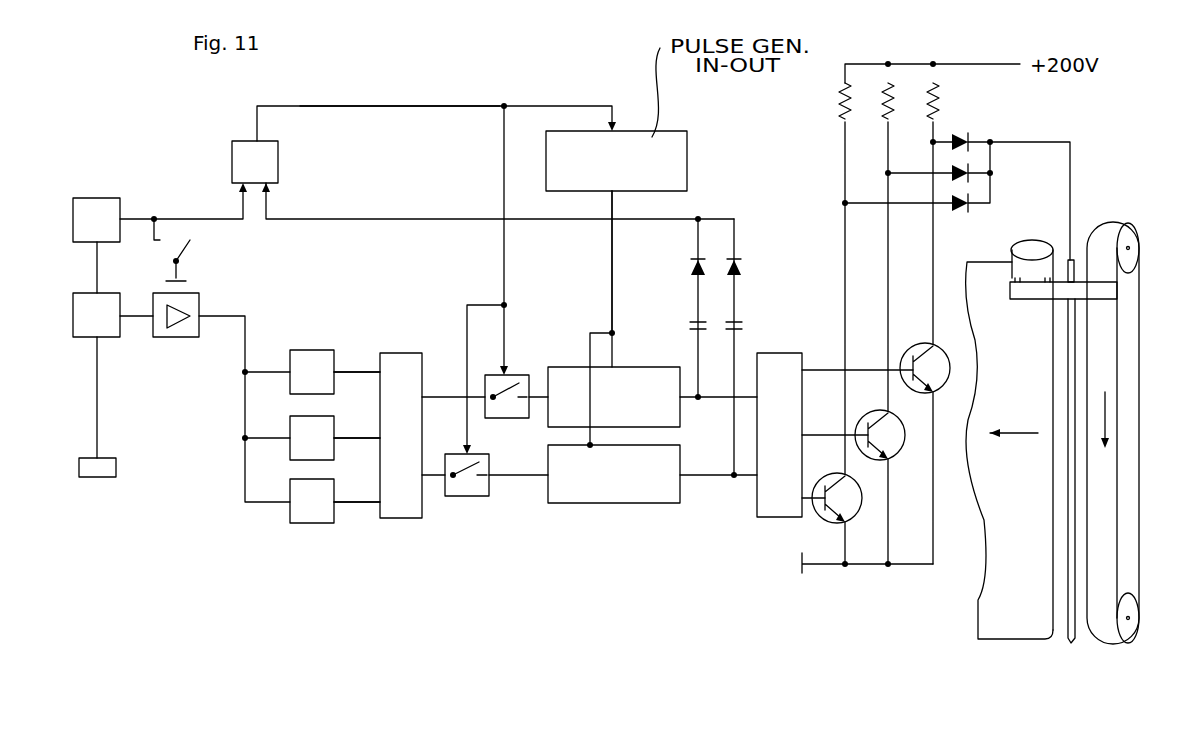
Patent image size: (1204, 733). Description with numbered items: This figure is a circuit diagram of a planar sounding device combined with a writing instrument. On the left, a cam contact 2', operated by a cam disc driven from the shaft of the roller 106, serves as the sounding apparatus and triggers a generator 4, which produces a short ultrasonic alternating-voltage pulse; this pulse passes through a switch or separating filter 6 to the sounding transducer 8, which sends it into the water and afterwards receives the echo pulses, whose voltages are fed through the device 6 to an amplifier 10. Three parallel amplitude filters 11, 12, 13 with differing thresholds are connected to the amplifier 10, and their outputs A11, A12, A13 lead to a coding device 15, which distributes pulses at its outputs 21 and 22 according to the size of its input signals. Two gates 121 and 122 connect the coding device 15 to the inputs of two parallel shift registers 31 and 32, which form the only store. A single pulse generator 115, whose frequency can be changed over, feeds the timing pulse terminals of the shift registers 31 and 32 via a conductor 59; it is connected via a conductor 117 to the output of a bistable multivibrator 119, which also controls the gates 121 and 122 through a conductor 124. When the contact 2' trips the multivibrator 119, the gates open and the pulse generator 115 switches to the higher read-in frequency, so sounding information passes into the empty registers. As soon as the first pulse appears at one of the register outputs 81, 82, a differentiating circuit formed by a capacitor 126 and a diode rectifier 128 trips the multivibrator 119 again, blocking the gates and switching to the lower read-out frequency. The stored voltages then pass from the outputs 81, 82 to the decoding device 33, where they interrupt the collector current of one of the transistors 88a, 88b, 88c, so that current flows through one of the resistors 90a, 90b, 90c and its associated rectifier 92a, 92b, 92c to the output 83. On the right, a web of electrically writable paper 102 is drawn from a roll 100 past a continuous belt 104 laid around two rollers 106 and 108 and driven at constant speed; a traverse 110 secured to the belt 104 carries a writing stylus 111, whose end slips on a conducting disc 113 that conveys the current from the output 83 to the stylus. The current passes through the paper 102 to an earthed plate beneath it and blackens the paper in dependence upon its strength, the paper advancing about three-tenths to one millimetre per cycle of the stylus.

The generator 4 is at (98, 203).
The switch or separating filter 6 is at (107, 327).
The sounding transducer 8 is at (106, 470).
The amplifier 10 is at (183, 330).
The cam contact 2' is at (193, 259).
The bistable multivibrator 119 is at (268, 159).
The conductor 117 is at (408, 105).
The pulse generator 115 is at (668, 137).
The amplitude filter 13 is at (297, 380).
The amplitude filter 12 is at (298, 447).
The amplitude filter 11 is at (300, 510).
The output line A13 is at (358, 373).
The output line A12 is at (358, 439).
The output line A11 is at (358, 503).
The coding device 15 is at (394, 508).
The output of the coding device 21 is at (440, 395).
The output of the coding device 22 is at (431, 473).
The gate 121 is at (515, 382).
The gate 122 is at (470, 487).
The conductor 124 is at (503, 255).
The conductor 59 is at (610, 262).
The shift register 31 is at (637, 375).
The shift register 32 is at (623, 495).
The output of the shift register 81 is at (715, 398).
The output of the shift register 82 is at (710, 478).
The diode rectifier 128 is at (740, 262).
The capacitor 126 is at (742, 326).
The decoding device 33 is at (772, 507).
The transistor 88a is at (828, 485).
The transistor 88b is at (872, 420).
The transistor 88c is at (918, 355).
The resistor 90a is at (840, 105).
The resistor 90b is at (885, 106).
The resistor 90c is at (936, 106).
The rectifier 92a is at (961, 211).
The rectifier 92b is at (957, 177).
The rectifier 92c is at (965, 137).
The output of the decoding device 83 is at (1036, 140).
The roll 100 is at (1031, 249).
The traverse 110 is at (1105, 291).
The writing stylus 111 is at (1010, 282).
The electrically writable paper 102 is at (999, 633).
The conducting disc 113 is at (1072, 641).
The continuous belt 104 is at (1130, 400).
The roller 106 is at (1126, 236).
The roller 108 is at (1130, 636).